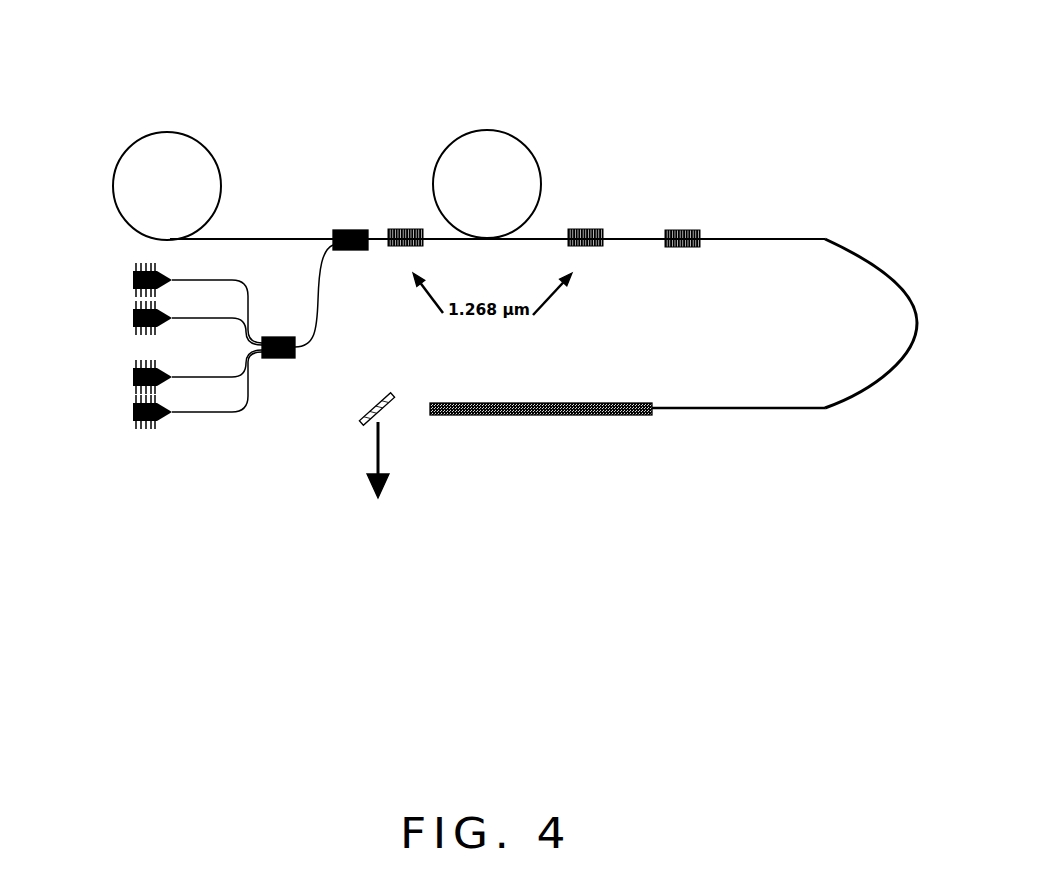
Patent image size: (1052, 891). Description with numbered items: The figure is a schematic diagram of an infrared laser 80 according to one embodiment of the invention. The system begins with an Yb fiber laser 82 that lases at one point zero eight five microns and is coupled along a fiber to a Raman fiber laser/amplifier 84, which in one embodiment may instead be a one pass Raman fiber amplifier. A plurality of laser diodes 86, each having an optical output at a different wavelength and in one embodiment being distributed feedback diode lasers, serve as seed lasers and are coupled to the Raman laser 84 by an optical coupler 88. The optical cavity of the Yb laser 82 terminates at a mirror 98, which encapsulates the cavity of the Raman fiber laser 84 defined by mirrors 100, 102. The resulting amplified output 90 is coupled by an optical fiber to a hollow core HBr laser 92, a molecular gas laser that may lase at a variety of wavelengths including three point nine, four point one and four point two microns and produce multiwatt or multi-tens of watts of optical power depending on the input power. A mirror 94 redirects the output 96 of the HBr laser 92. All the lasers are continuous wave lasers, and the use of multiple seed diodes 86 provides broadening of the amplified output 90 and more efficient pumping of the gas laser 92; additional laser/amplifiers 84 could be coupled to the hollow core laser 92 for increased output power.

The infrared laser 80 is at (348, 33).
The Yb fiber laser 82 is at (217, 187).
The Raman fiber laser/amplifier 84 is at (538, 162).
The laser diodes 86 is at (165, 276).
The optical coupler 88 is at (345, 232).
The amplified output 90 is at (838, 240).
The hollow core HBr laser 92 is at (557, 400).
The mirror 94 is at (380, 392).
The output 96 is at (378, 460).
The mirror 98 is at (673, 225).
The mirror 100 is at (398, 243).
The mirror 102 is at (603, 245).